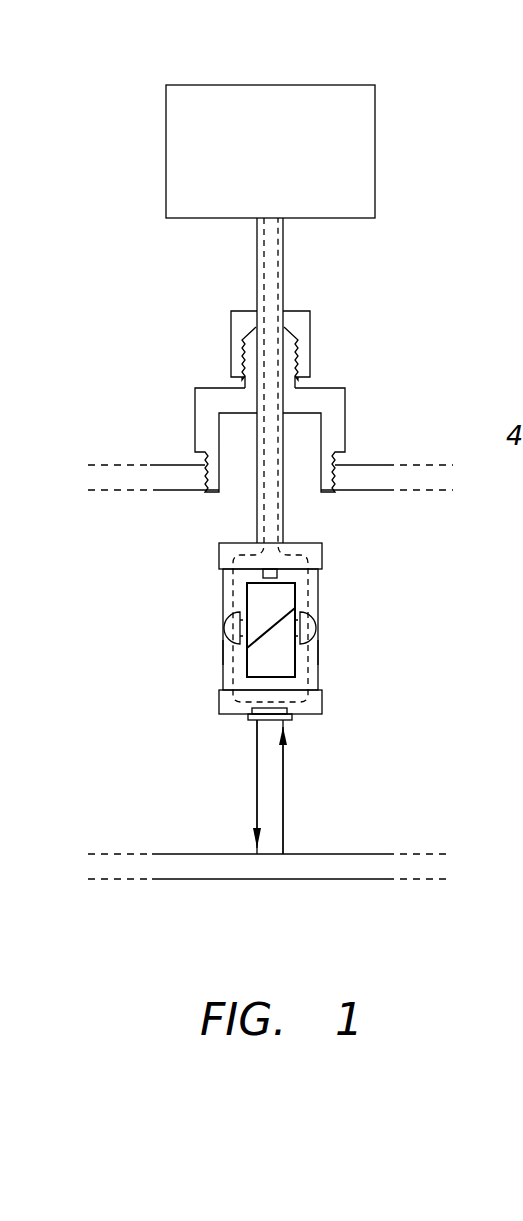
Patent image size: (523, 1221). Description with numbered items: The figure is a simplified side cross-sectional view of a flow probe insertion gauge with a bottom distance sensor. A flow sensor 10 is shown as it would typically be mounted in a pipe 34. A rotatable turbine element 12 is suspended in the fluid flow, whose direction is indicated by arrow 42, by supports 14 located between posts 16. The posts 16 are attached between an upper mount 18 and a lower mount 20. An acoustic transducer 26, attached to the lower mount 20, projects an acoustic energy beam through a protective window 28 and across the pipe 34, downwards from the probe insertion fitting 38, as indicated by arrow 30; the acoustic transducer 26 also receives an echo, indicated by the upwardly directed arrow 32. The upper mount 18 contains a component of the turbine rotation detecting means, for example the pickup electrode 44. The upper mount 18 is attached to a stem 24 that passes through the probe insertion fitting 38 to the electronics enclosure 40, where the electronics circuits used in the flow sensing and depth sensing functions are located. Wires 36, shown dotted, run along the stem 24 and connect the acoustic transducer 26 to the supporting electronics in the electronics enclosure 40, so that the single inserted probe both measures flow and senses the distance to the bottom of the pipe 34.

The flow sensor 10 is at (450, 126).
The rotatable turbine element 12 is at (223, 675).
The supports 14 is at (224, 622).
The posts 16 is at (223, 652).
The upper mount 18 is at (220, 557).
The lower mount 20 is at (219, 708).
The stem 24 is at (284, 250).
The acoustic transducer 26 is at (322, 703).
The protective window 28 is at (292, 716).
The arrow 30 is at (255, 770).
The upwardly directed arrow 32 is at (283, 770).
The pipe 34 is at (177, 491).
The wires 36 is at (277, 260).
The probe insertion fitting 38 is at (210, 387).
The electronics enclosure 40 is at (166, 135).
The arrow 42 is at (185, 637).
The pickup electrode 44 is at (275, 567).